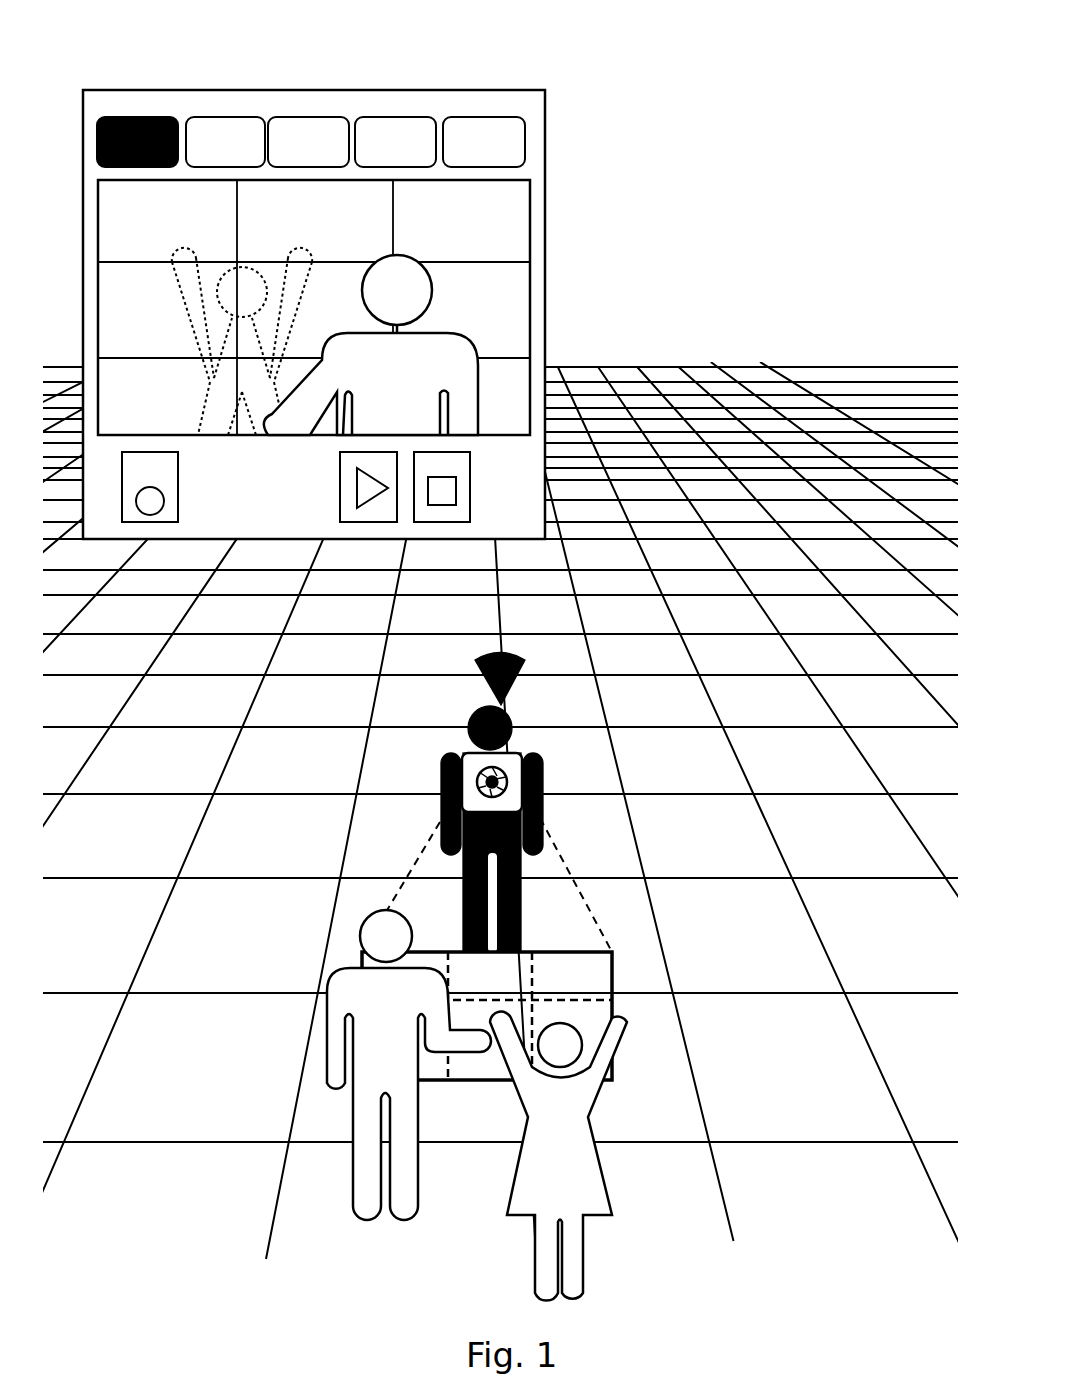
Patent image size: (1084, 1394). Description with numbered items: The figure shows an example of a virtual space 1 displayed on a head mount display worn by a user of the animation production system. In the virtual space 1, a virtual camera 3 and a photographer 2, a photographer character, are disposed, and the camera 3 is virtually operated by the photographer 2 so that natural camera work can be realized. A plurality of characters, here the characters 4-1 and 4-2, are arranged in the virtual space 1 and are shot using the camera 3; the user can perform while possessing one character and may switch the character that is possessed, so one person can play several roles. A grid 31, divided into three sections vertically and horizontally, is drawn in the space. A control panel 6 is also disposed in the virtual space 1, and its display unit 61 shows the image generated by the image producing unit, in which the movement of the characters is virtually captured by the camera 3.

The virtual space 1 is at (797, 333).
The photographer 2 is at (487, 803).
The camera 3 is at (520, 756).
The grid 31 is at (614, 958).
The character 4-1 is at (332, 1013).
The character 4-2 is at (588, 1105).
The control panel 6 is at (352, 275).
The display unit 61 is at (547, 288).